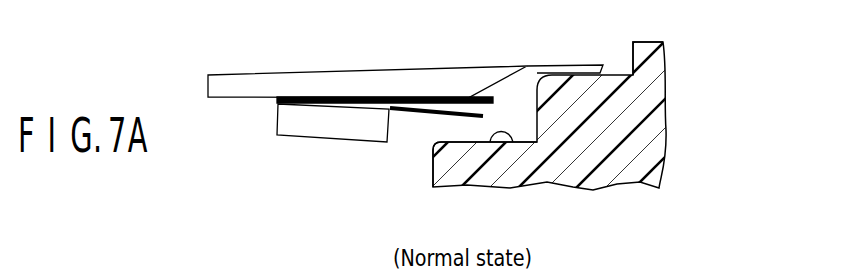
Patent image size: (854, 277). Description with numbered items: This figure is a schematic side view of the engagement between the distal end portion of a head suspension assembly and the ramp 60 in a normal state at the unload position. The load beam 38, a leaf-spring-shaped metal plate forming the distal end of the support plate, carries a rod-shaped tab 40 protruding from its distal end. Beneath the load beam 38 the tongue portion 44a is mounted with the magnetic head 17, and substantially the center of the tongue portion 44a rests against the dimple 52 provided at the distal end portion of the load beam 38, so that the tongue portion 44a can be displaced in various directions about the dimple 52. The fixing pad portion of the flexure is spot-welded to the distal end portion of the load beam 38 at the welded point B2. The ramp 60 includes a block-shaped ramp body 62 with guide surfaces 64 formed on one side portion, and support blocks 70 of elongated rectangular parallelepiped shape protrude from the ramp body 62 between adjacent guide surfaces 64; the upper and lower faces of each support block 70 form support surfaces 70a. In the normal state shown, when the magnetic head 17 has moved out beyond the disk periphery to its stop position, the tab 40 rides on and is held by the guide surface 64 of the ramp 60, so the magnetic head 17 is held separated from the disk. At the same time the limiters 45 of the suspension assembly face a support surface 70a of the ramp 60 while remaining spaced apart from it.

The load beam 38 is at (397, 80).
The dimple 52 is at (337, 99).
The tongue portion 44a is at (370, 100).
The welded point B2 is at (465, 98).
The magnetic head 17 is at (300, 124).
The limiter 45 is at (457, 118).
The ramp 60 is at (611, 121).
The ramp body 62 is at (650, 117).
The guide surface 64 is at (615, 74).
The tab 40 is at (562, 66).
The support block 70 is at (433, 178).
The support surface 70a is at (509, 142).